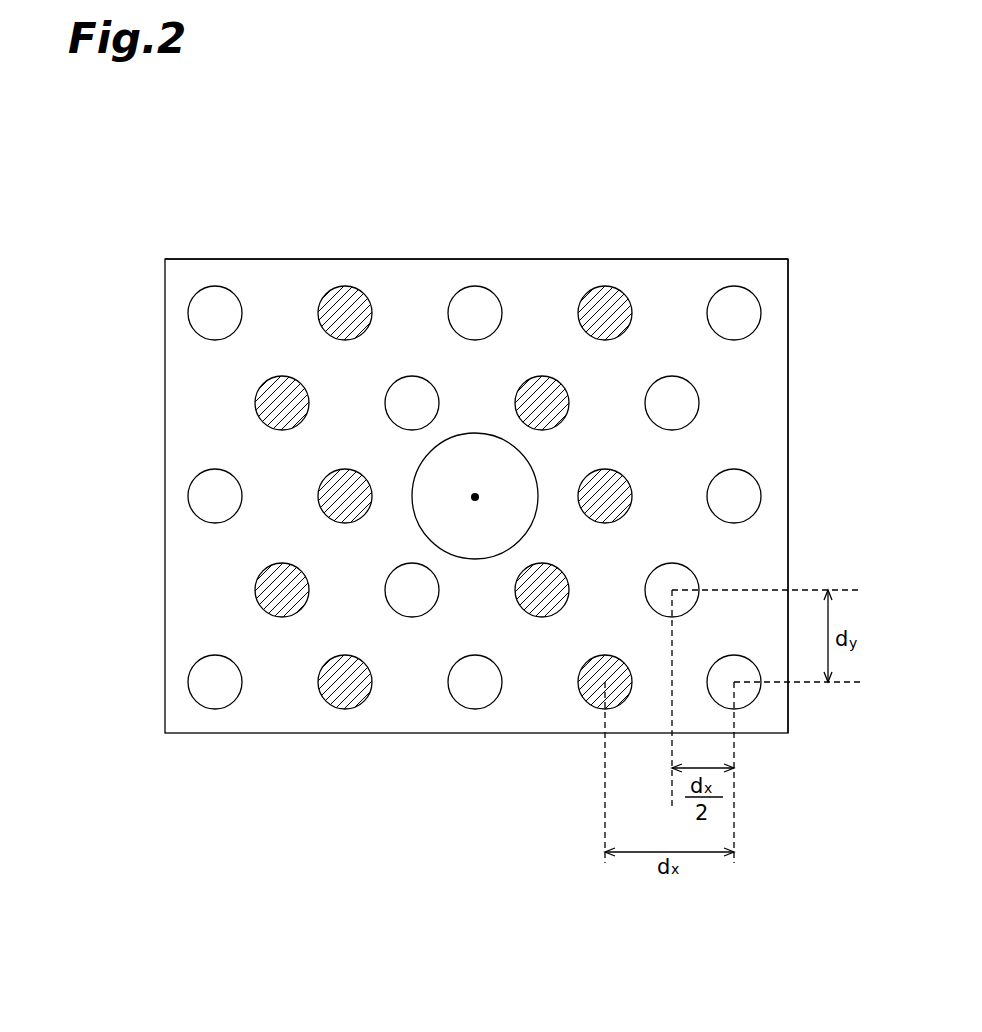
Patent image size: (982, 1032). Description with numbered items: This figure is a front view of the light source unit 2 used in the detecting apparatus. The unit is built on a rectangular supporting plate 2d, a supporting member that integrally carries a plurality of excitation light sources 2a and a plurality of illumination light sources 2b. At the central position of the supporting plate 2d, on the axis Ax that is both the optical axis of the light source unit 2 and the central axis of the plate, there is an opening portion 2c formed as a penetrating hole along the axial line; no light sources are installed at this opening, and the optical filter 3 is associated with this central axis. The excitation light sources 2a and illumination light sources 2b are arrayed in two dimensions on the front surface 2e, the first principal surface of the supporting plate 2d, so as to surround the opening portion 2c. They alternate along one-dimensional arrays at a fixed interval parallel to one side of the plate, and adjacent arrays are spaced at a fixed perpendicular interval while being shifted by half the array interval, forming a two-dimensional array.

The light source unit 2 is at (145, 220).
The excitation light sources 2a is at (187, 313).
The illumination light sources 2b is at (268, 613).
The opening portion 2c is at (484, 435).
The supporting plate 2d is at (788, 400).
The front surface 2e is at (690, 282).
The optical filter 3 is at (462, 455).